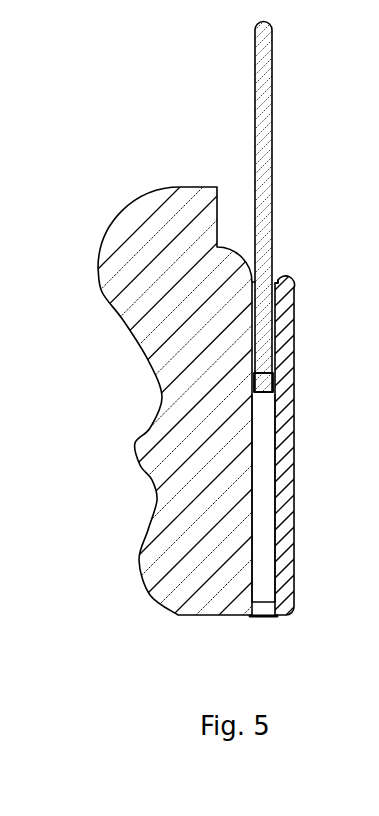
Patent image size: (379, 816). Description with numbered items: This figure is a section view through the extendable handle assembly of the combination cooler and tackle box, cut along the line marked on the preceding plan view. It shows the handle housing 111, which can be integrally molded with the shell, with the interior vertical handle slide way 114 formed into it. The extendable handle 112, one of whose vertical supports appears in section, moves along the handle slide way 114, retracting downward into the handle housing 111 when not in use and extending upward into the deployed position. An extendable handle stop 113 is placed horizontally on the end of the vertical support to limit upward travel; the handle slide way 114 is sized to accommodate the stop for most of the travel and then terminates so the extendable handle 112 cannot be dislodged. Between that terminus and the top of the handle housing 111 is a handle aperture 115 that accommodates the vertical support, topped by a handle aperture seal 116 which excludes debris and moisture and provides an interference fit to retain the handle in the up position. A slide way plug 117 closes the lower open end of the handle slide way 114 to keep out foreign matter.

The handle housing 111 is at (293, 363).
The extendable handle 112 is at (272, 157).
The extendable handle stop 113 is at (262, 392).
The handle slide way 114 is at (263, 530).
The handle aperture 115 is at (273, 322).
The handle aperture seal 116 is at (276, 281).
The slide way plug 117 is at (260, 619).